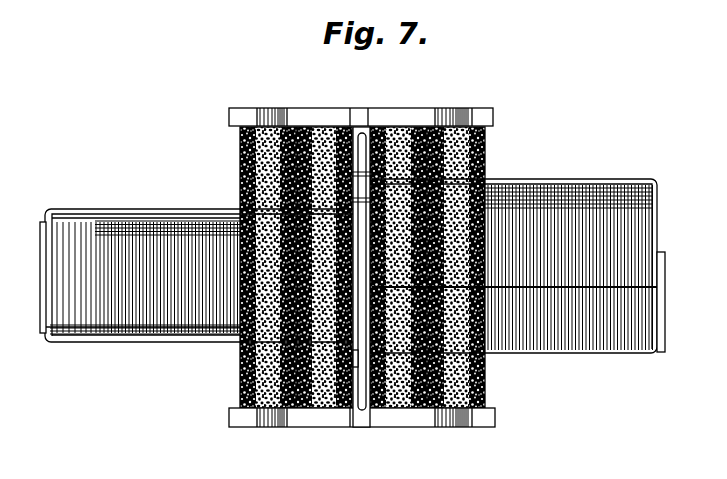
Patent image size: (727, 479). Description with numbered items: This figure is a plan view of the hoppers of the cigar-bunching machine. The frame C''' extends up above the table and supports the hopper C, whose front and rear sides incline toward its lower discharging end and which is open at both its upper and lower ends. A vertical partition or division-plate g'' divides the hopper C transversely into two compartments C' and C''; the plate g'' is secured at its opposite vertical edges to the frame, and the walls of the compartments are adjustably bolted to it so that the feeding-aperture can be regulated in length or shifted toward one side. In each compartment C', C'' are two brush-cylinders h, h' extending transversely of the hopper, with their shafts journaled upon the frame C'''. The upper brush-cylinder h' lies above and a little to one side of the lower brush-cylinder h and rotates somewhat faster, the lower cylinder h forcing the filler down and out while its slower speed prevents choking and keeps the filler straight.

The hopper C is at (513, 248).
The hopper compartment C' is at (197, 275).
The hopper compartment C'' is at (518, 268).
The frame C''' is at (362, 270).
The vertical partition g'' is at (375, 248).
The lower brush-cylinder h is at (427, 267).
The upper brush-cylinder h' is at (296, 267).